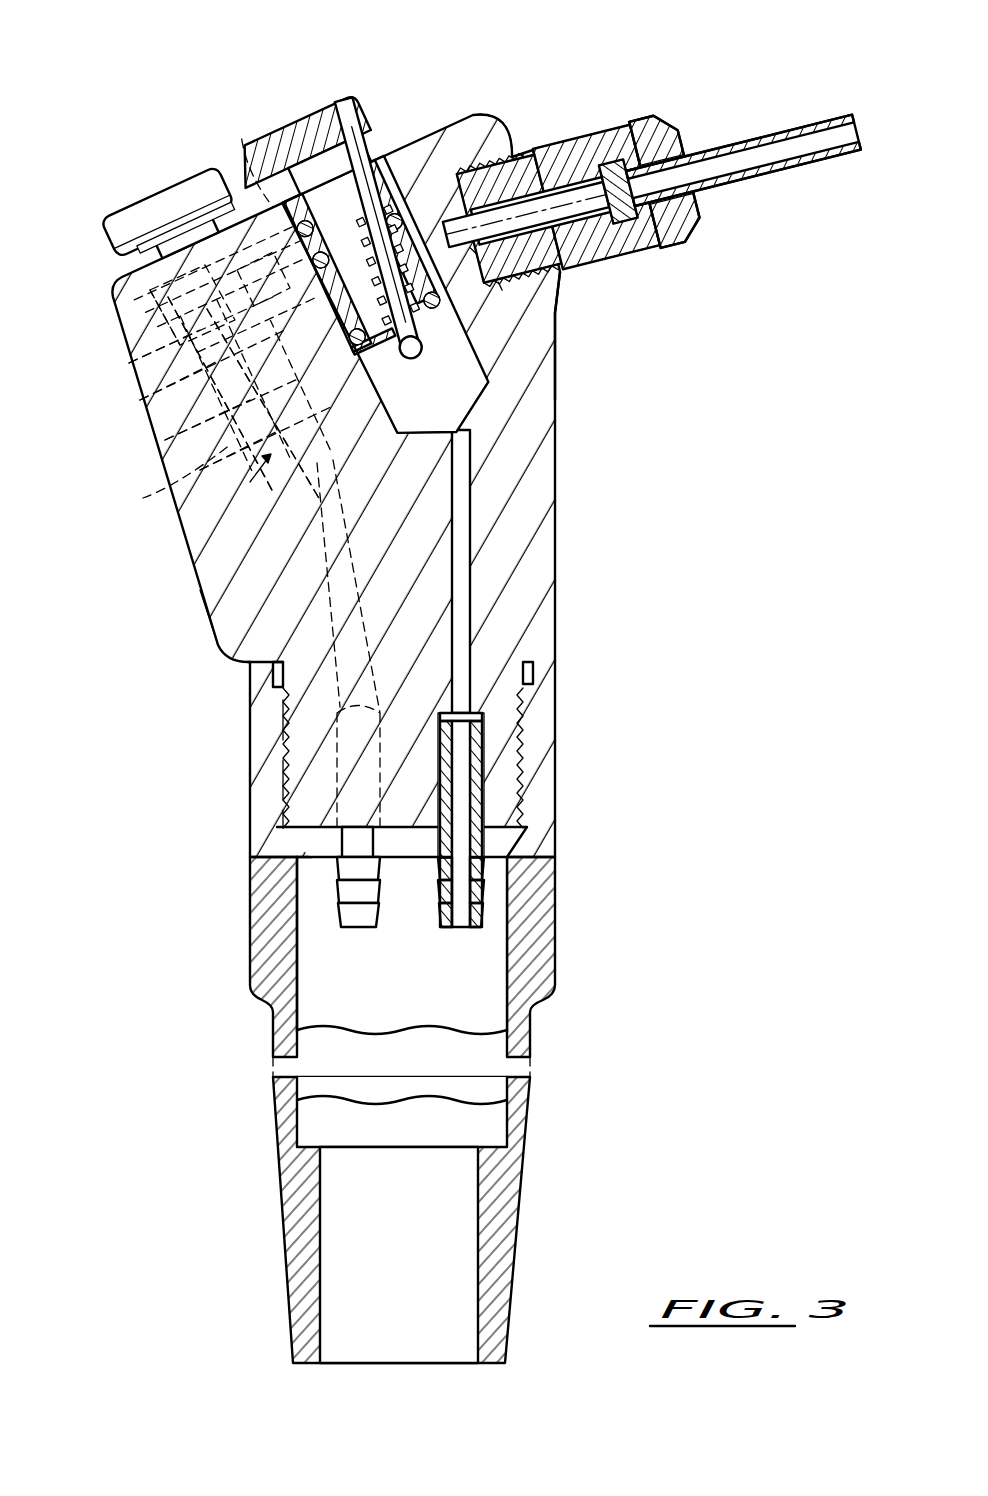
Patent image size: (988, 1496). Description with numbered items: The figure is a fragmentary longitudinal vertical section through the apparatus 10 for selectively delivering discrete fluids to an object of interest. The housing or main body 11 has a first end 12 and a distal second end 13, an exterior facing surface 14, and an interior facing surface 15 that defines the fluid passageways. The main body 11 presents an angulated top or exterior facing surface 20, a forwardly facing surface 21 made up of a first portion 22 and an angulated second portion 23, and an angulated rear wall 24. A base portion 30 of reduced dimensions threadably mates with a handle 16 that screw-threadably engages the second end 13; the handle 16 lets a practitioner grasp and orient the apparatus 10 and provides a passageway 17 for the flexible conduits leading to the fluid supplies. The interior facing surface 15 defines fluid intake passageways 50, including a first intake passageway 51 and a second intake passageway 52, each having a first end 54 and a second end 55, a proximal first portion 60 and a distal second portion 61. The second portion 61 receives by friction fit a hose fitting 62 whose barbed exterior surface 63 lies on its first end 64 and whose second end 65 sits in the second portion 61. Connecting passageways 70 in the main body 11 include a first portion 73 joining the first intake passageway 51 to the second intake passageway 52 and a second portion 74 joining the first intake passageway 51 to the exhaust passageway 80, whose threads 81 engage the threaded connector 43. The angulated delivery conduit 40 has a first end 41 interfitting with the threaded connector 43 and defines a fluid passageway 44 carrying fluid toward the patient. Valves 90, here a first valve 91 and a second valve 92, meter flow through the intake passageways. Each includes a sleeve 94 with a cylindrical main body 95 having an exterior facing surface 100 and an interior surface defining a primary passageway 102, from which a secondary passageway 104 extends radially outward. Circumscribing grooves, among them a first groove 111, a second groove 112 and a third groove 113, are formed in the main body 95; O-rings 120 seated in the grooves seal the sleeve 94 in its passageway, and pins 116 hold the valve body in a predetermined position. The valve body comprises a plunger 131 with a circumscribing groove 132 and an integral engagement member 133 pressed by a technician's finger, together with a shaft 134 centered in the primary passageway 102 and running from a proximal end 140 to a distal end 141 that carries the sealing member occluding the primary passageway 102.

The apparatus 10 is at (215, 60).
The housing or main body 11 is at (149, 463).
The first end 12 is at (475, 125).
The second end 13 is at (500, 762).
The exterior facing surface 14 is at (557, 505).
The interior facing surface 15 is at (392, 307).
The handle 16 is at (520, 1117).
The passageway 17 is at (490, 1122).
The angulated top or exterior facing surface 20 is at (463, 122).
The forwardly facing surface 21 is at (568, 362).
The first portion 22 is at (560, 300).
The second portion 23 is at (557, 565).
The angulated rear wall 24 is at (205, 600).
The base portion 30 is at (498, 708).
The angulated delivery conduit 40 is at (583, 200).
The first end 41 is at (731, 163).
The threaded connector 43 is at (666, 179).
The fluid passageway 44 is at (651, 184).
The fluid intake passageways 50 is at (257, 518).
The first intake passageway 51 is at (473, 436).
The second intake passageway 52 is at (272, 545).
The first end 54 is at (175, 318).
The second end 55 is at (330, 812).
The first portion 60 is at (590, 390).
The second portion 61 is at (330, 735).
The hose fittings 62 is at (350, 913).
The barbed exterior surface 63 is at (350, 873).
The first end 64 is at (353, 927).
The second end 65 is at (337, 767).
The connecting passageways 70 is at (452, 172).
The first portion 73 is at (369, 265).
The second portion 74 is at (522, 280).
The exhaust passageway 80 is at (557, 207).
The threads 81 is at (552, 283).
The valves 90 is at (210, 372).
The first valve 91 is at (364, 257).
The second valve 92 is at (186, 227).
The sleeve 94 is at (377, 223).
The main body 95 is at (472, 407).
The exterior facing surface 100 is at (200, 438).
The primary passageway 102 is at (426, 432).
The secondary passageway 104 is at (387, 265).
The first groove 111 is at (195, 345).
The second groove 112 is at (255, 174).
The third groove 113 is at (354, 462).
The pins 116 is at (160, 290).
The O-rings 120 is at (300, 141).
The plunger 131 is at (344, 99).
The circumscribing groove 132 is at (329, 164).
The engagement member 133 is at (172, 220).
The shaft 134 is at (217, 517).
The proximal end 140 is at (379, 224).
The distal end 141 is at (410, 347).